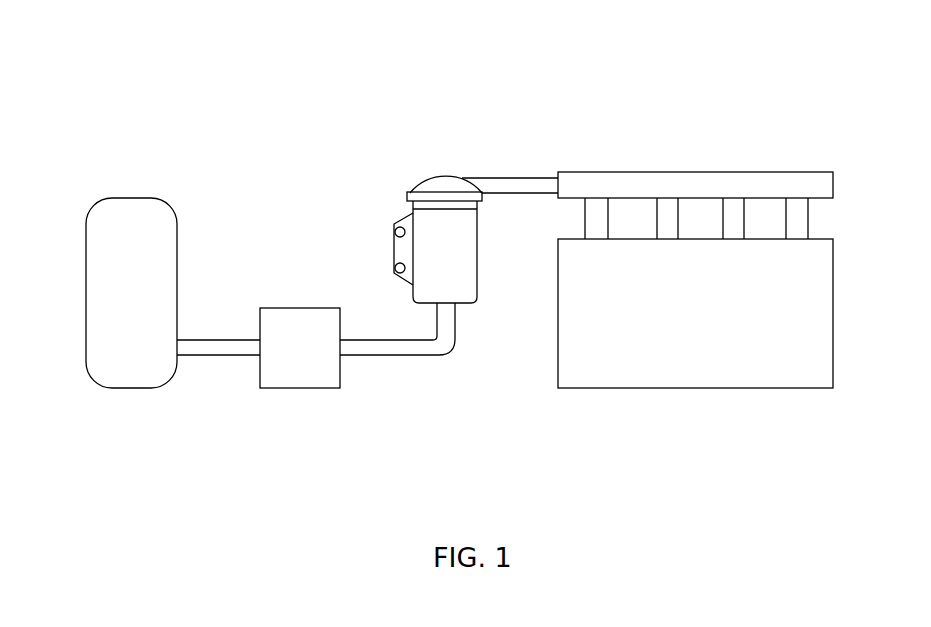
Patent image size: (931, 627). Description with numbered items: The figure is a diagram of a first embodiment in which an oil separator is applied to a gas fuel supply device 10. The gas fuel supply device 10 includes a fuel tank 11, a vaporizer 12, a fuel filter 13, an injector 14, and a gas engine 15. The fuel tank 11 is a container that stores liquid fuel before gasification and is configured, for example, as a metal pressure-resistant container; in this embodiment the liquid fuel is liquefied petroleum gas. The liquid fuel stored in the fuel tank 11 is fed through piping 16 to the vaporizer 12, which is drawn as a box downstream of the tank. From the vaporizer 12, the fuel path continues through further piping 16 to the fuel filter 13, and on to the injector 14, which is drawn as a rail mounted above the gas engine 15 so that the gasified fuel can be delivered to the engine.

The gas fuel supply device 10 is at (305, 140).
The fuel tank 11 is at (130, 198).
The vaporizer 12 is at (298, 308).
The fuel filter 13 is at (442, 176).
The injector 14 is at (693, 172).
The gas engine 15 is at (693, 388).
The piping 16 is at (237, 356).